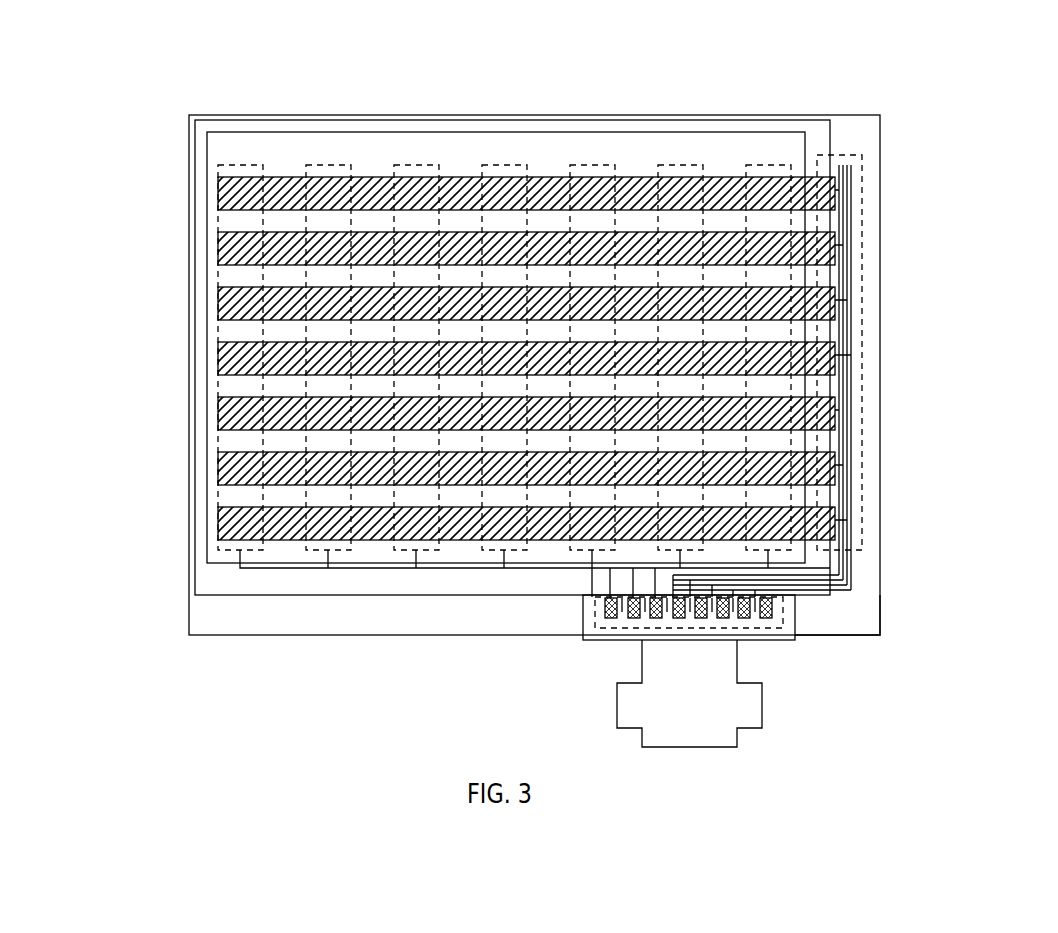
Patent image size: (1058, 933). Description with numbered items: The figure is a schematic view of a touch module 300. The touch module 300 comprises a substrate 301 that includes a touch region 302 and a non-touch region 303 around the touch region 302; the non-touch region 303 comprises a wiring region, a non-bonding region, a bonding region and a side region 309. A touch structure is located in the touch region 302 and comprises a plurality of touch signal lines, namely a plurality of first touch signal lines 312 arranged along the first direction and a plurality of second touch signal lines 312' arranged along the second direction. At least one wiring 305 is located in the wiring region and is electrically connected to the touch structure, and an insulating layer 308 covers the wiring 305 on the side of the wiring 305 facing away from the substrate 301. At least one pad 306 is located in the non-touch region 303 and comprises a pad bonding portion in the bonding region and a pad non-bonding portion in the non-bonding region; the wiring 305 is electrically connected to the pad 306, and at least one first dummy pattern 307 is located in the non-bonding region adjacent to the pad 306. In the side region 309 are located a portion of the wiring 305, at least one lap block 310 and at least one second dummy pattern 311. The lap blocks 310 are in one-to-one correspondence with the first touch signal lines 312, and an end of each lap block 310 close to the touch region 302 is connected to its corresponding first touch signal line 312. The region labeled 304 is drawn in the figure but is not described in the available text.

The touch module 300 is at (105, 57).
The substrate 301 is at (190, 592).
The touch region 302 is at (452, 153).
The non-touch region 303 is at (852, 602).
The connection pad region 304 is at (595, 622).
The wiring 305 is at (850, 580).
The pad 306 is at (690, 605).
The first dummy pattern 307 is at (743, 605).
The insulating layer 308 is at (378, 595).
The side region 309 is at (843, 165).
The lap block 310 is at (838, 252).
The second dummy pattern 311 is at (840, 333).
The first touch signal line 312 is at (467, 358).
The second touch signal line 312' is at (504, 296).